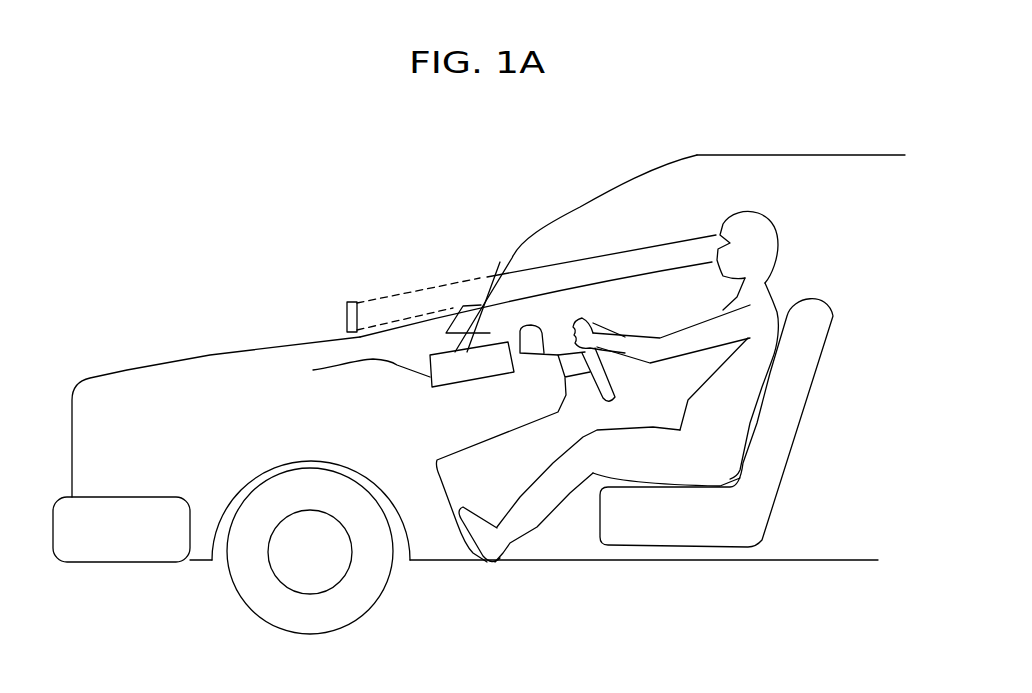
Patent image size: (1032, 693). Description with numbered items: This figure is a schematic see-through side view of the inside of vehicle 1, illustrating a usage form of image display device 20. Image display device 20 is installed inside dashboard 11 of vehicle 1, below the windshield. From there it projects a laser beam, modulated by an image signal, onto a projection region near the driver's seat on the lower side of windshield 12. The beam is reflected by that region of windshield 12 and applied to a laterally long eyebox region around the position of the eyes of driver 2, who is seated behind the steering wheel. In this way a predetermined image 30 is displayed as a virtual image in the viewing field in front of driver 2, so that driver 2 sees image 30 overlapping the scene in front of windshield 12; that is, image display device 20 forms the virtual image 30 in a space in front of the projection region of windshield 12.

The vehicle 1 is at (165, 352).
The driver 2 is at (793, 245).
The dashboard 11 is at (508, 325).
The windshield 12 is at (567, 215).
The image display device 20 is at (313, 370).
The image 30 is at (351, 301).